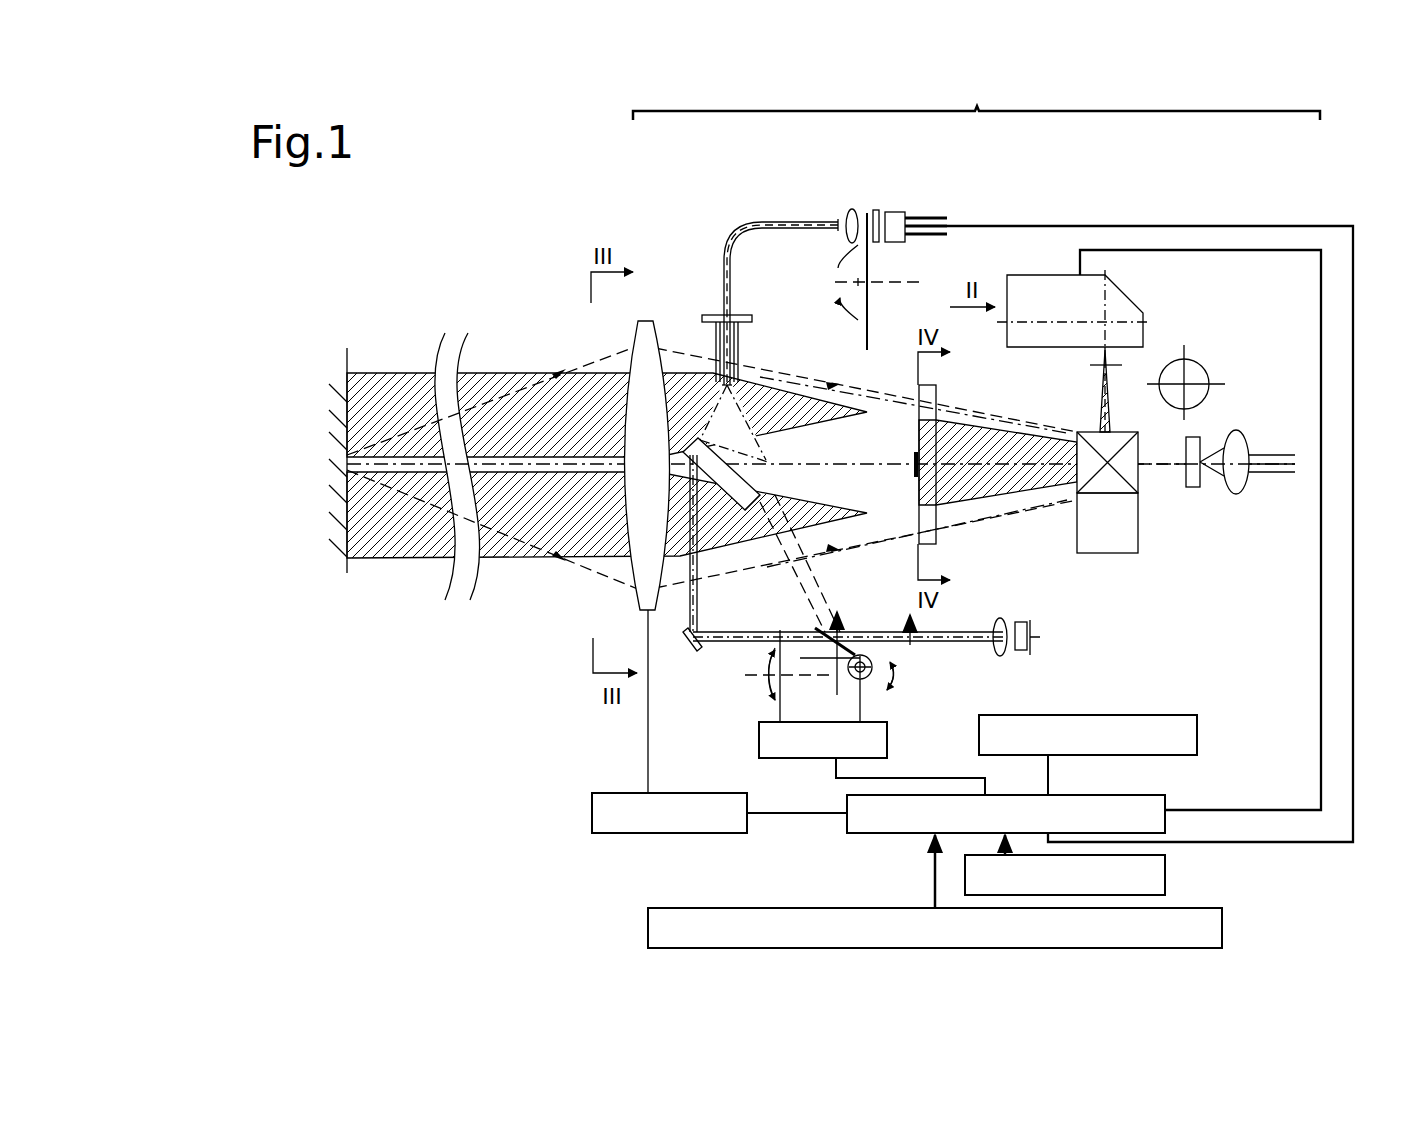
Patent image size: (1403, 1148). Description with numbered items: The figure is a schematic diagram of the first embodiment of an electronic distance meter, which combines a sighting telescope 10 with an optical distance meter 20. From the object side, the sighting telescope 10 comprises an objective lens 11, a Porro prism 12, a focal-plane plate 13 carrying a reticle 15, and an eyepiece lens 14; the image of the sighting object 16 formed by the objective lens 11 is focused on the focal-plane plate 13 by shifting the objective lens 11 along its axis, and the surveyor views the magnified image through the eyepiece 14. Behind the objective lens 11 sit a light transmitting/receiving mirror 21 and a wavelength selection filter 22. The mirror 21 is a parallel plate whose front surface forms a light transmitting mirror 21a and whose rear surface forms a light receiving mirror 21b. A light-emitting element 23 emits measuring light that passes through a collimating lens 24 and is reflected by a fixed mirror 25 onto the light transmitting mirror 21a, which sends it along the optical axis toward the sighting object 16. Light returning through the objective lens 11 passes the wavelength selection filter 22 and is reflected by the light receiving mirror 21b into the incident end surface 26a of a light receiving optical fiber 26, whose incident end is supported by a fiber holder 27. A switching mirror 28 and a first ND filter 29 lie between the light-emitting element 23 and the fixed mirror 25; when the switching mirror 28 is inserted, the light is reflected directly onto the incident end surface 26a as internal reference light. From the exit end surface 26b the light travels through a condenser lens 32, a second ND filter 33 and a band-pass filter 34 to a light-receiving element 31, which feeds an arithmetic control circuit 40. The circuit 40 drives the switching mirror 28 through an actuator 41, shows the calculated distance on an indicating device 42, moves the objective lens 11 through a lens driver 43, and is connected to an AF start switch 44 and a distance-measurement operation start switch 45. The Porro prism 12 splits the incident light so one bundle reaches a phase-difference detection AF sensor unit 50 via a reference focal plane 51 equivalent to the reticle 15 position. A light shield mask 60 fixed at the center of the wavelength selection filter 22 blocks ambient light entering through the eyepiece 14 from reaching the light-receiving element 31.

The sighting telescope 10 is at (976, 96).
The objective lens 11 is at (650, 320).
The Porro prism 12 is at (1077, 432).
The focal-plane plate 13 is at (1196, 377).
The eyepiece lens 14 is at (1238, 440).
The reticle 15 is at (1173, 386).
The sighting object 16 is at (345, 440).
The optical distance meter 20 is at (712, 232).
The light transmitting/receiving mirror 21 is at (740, 515).
The light transmitting mirror 21a is at (712, 540).
The light receiving mirror 21b is at (762, 472).
The wavelength selection filter 22 is at (942, 541).
The light-emitting element 23 is at (1015, 626).
The collimating lens 24 is at (1020, 652).
The fixed mirror 25 is at (692, 653).
The light receiving optical fiber 26 is at (764, 222).
The incident end surface 26a is at (740, 388).
The exit end surface 26b is at (838, 222).
The fiber holder 27 is at (746, 330).
The switching mirror 28 is at (850, 635).
The first ND filter 29 is at (782, 710).
The light-receiving element 31 is at (905, 236).
The condenser lens 32 is at (853, 218).
The second ND filter 33 is at (866, 326).
The band-pass filter 34 is at (880, 213).
The arithmetic control circuit 40 is at (847, 800).
The actuator 41 is at (759, 740).
The indicating device 42 is at (1197, 735).
The lens driver 43 is at (592, 812).
The AF start switch 44 is at (1165, 873).
The distance-measurement operation start switch 45 is at (870, 908).
The phase-difference detection AF sensor unit 50 is at (1048, 272).
The reference focal plane 51 is at (1098, 372).
The light shield mask 60 is at (914, 466).